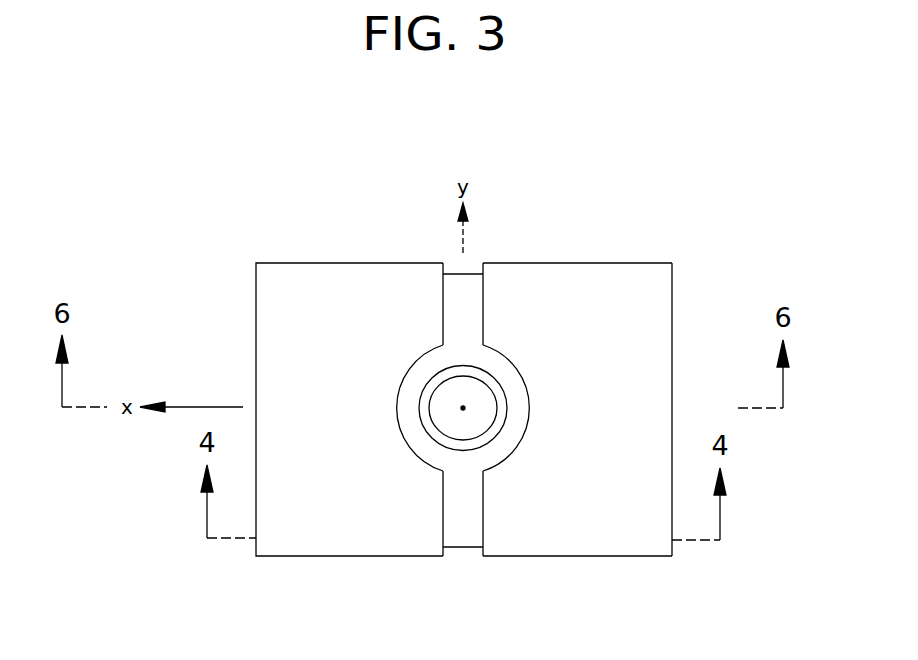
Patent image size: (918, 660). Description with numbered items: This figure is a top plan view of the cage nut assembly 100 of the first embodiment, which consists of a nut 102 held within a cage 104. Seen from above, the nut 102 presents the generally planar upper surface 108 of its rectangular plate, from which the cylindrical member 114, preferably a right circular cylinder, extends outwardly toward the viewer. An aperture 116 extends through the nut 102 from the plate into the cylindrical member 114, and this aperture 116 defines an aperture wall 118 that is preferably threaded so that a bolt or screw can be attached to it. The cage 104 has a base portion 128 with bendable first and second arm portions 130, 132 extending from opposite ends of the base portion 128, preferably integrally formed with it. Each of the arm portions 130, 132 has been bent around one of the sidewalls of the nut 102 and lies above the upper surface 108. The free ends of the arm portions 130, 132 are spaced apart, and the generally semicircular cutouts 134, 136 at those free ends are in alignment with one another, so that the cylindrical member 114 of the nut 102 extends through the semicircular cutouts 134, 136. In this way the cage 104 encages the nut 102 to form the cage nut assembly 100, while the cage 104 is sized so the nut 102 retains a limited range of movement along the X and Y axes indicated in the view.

The cage nut assembly 100 is at (760, 285).
The nut 102 is at (472, 297).
The cage 104 is at (653, 326).
The upper surface 108 is at (468, 520).
The cylindrical member 114 is at (504, 401).
The aperture 116 is at (472, 395).
The aperture wall 118 is at (420, 386).
The base portion 128 is at (448, 266).
The first arm portion 130 is at (647, 273).
The second arm portion 132 is at (293, 296).
The semicircular cutout 134 is at (500, 365).
The semicircular cutout 136 is at (408, 407).